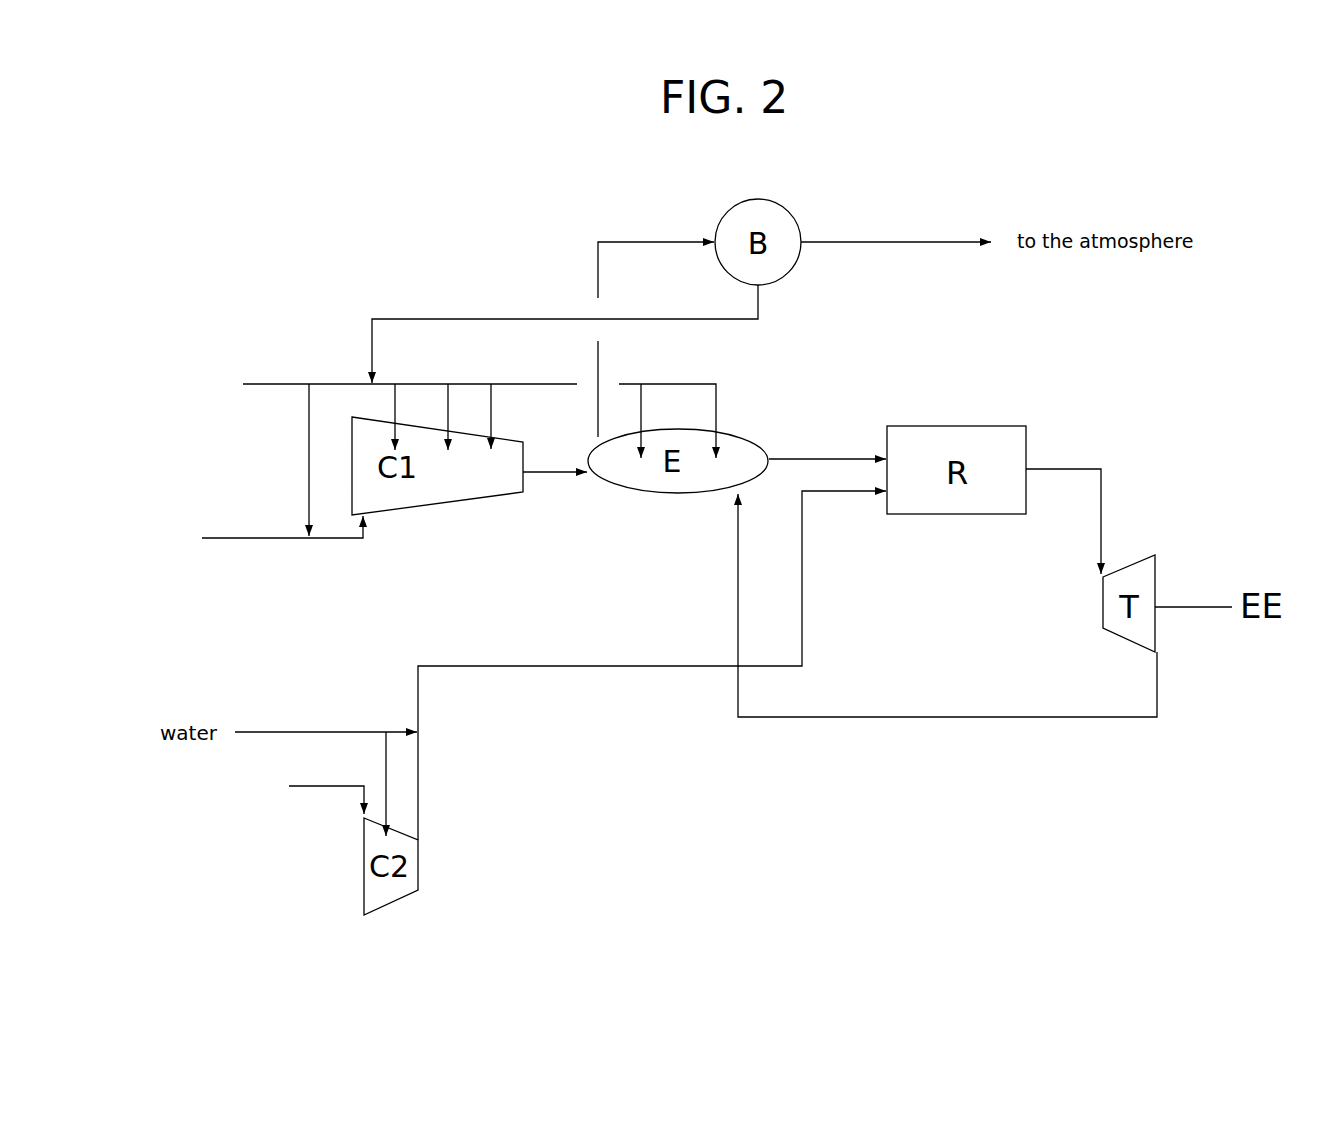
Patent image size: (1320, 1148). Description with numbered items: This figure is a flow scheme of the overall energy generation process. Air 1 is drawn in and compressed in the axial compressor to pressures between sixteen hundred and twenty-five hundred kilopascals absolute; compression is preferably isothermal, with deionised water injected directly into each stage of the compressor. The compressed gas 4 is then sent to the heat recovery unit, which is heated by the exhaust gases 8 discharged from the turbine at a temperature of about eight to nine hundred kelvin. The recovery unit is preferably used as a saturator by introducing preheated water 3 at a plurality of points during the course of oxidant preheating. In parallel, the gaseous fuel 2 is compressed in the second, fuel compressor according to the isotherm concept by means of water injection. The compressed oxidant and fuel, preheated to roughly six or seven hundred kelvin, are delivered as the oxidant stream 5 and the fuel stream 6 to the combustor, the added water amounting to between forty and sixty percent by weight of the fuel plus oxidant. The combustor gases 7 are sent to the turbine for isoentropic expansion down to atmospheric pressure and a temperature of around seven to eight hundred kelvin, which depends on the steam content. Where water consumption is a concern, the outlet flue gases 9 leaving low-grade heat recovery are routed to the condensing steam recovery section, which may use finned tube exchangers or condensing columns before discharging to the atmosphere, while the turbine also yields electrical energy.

The air 1 is at (234, 541).
The gaseous fuel 2 is at (262, 785).
The preheated water 3 is at (372, 445).
The compressed gas stream 4 is at (555, 488).
The preheated oxidant stream 5 is at (827, 443).
The compressed fuel stream 6 is at (652, 665).
The combustor gas stream 7 is at (1078, 521).
The exhaust gases 8 is at (947, 605).
The outlet flue gases 9 is at (656, 324).